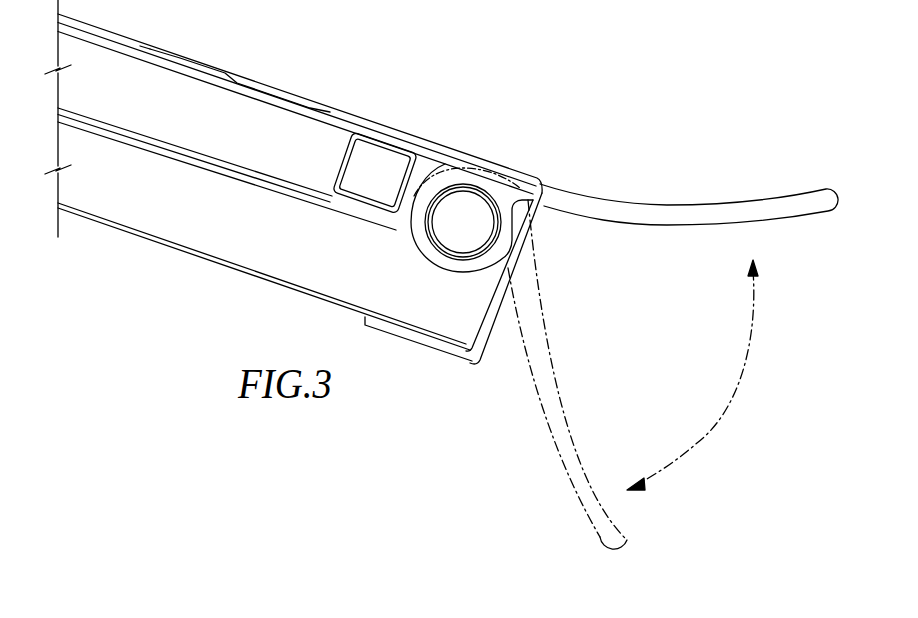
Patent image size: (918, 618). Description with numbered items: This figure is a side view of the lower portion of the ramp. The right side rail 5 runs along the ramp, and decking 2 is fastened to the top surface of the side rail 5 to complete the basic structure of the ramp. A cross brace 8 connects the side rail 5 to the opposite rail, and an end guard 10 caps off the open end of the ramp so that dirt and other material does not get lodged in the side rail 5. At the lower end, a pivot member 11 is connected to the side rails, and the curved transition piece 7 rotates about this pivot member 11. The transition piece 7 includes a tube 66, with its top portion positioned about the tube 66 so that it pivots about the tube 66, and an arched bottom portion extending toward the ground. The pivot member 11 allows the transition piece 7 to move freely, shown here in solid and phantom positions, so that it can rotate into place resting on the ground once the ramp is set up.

The decking 2 is at (235, 79).
The right side rail 5 is at (183, 228).
The transition piece 7 is at (582, 197).
The cross brace 8 is at (350, 143).
The end guard 10 is at (390, 328).
The pivot member 11 is at (458, 183).
The tube 66 is at (438, 201).